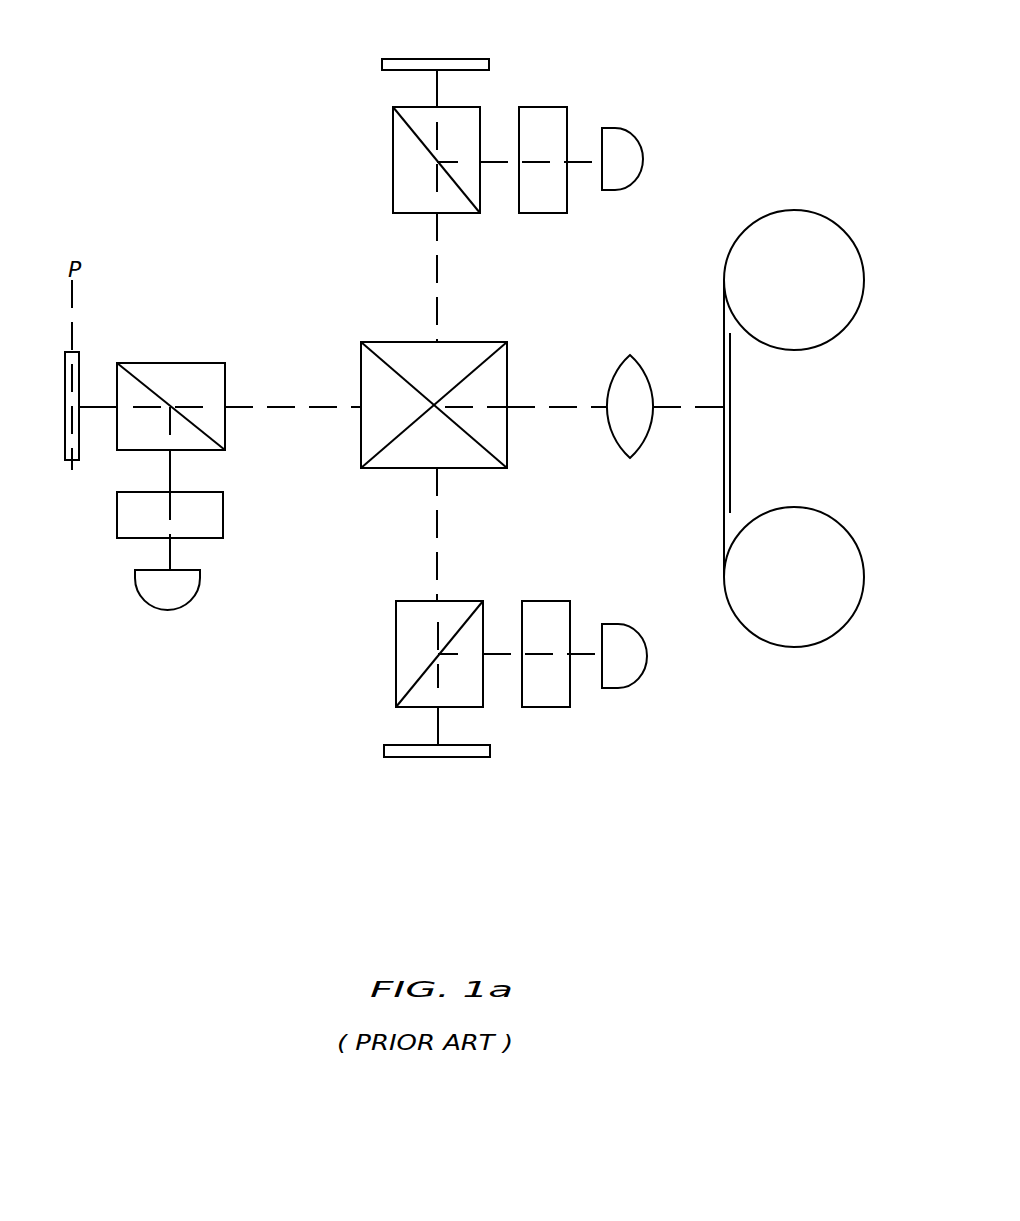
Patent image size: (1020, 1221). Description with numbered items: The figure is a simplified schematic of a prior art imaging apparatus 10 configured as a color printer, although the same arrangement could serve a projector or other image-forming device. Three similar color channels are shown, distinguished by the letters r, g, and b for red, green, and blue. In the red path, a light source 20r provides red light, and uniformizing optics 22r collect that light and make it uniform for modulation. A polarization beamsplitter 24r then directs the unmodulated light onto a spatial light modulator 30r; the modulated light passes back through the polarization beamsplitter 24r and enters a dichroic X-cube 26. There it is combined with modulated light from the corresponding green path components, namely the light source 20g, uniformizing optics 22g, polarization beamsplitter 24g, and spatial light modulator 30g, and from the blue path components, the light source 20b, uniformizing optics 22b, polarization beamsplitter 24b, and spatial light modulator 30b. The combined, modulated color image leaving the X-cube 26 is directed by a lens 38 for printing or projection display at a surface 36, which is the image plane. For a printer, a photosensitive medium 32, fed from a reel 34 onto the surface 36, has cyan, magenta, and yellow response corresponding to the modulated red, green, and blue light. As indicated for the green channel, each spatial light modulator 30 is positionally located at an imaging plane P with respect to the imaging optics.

The imaging apparatus 10 is at (220, 158).
The light source 20b is at (640, 140).
The light source 20g is at (195, 597).
The light source 20r is at (640, 667).
The uniformizing optics 22b is at (547, 107).
The uniformizing optics 22g is at (225, 510).
The uniformizing optics 22r is at (540, 707).
The polarization beamsplitter 24b is at (393, 180).
The polarization beamsplitter 24g is at (177, 366).
The polarization beamsplitter 24r is at (396, 638).
The dichroic X-cube 26 is at (507, 430).
The spatial light modulator 30 is at (55, 455).
The spatial light modulator 30b is at (408, 59).
The spatial light modulator 30g is at (65, 437).
The spatial light modulator 30r is at (445, 757).
The photosensitive medium 32 is at (722, 350).
The reel 34 is at (831, 215).
The surface 36 is at (730, 468).
The lens 38 is at (620, 372).